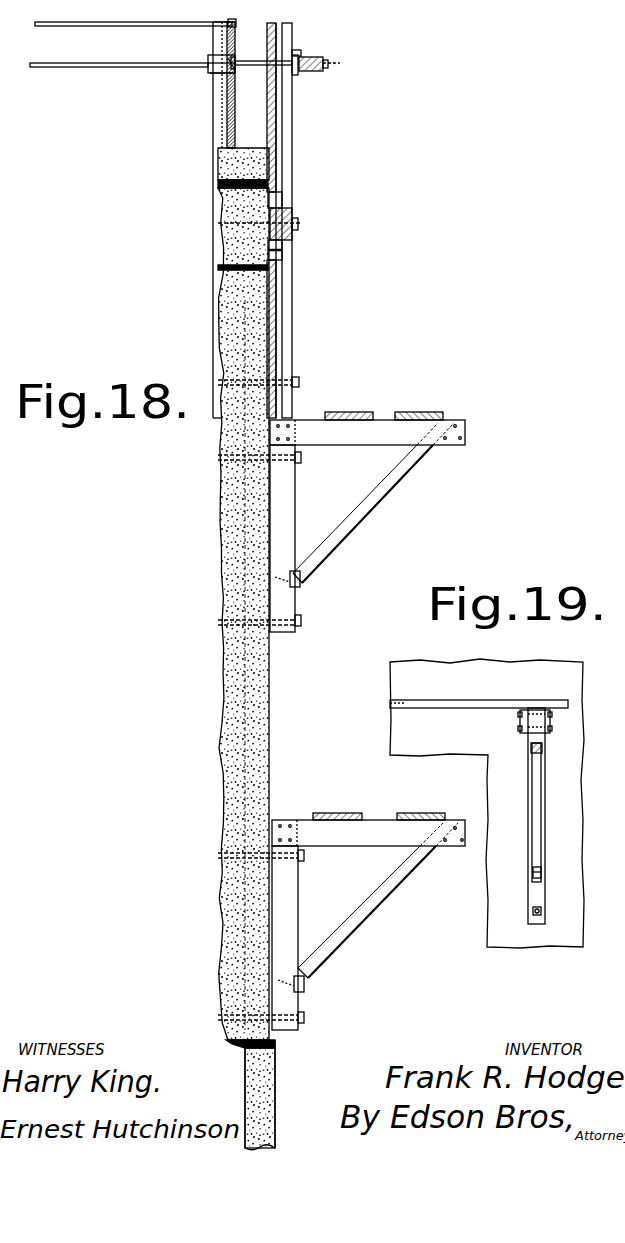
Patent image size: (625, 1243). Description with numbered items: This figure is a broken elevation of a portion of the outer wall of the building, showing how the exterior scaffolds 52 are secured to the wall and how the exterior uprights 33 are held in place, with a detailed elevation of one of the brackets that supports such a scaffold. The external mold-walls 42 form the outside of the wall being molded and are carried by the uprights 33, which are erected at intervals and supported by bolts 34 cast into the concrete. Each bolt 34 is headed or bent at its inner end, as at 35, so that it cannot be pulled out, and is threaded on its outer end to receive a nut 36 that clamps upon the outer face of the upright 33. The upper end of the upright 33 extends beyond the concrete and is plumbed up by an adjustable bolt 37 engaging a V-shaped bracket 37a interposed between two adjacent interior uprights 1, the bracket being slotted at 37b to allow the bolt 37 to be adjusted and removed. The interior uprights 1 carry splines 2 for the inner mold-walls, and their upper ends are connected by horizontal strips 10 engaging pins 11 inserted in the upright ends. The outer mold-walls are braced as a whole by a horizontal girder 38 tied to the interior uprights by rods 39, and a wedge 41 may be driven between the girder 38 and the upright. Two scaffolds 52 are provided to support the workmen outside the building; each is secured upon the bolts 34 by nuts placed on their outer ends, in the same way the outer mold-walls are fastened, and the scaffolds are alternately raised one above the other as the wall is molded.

In FIG. 18, the upright 1 is at (212, 125).
In FIG. 18, the spline 2 is at (279, 165).
In FIG. 18, the horizontal strip 10 is at (148, 27).
In FIG. 18, the pin 11 is at (228, 23).
In FIG. 18, the upright 33 is at (288, 126).
In FIG. 18, the bolt 34 is at (300, 224).
In FIG. 19, the bolt 34 is at (531, 748).
In FIG. 18, the head of bolt 35 is at (222, 62).
In FIG. 18, the nut 36 is at (297, 74).
In FIG. 19, the nut 36 is at (535, 908).
In FIG. 18, the adjustable bolt 37 is at (252, 66).
In FIG. 18, the V-shaped bracket 37a is at (216, 72).
In FIG. 18, the slot 37b is at (236, 60).
In FIG. 18, the horizontal girder 38 is at (318, 72).
In FIG. 18, the rod 39 is at (157, 68).
In FIG. 18, the wedge 41 is at (300, 51).
In FIG. 18, the external mold-wall 42 is at (272, 138).
In FIG. 18, the scaffold 52 is at (367, 710).
In FIG. 19, the scaffold 52 is at (479, 694).